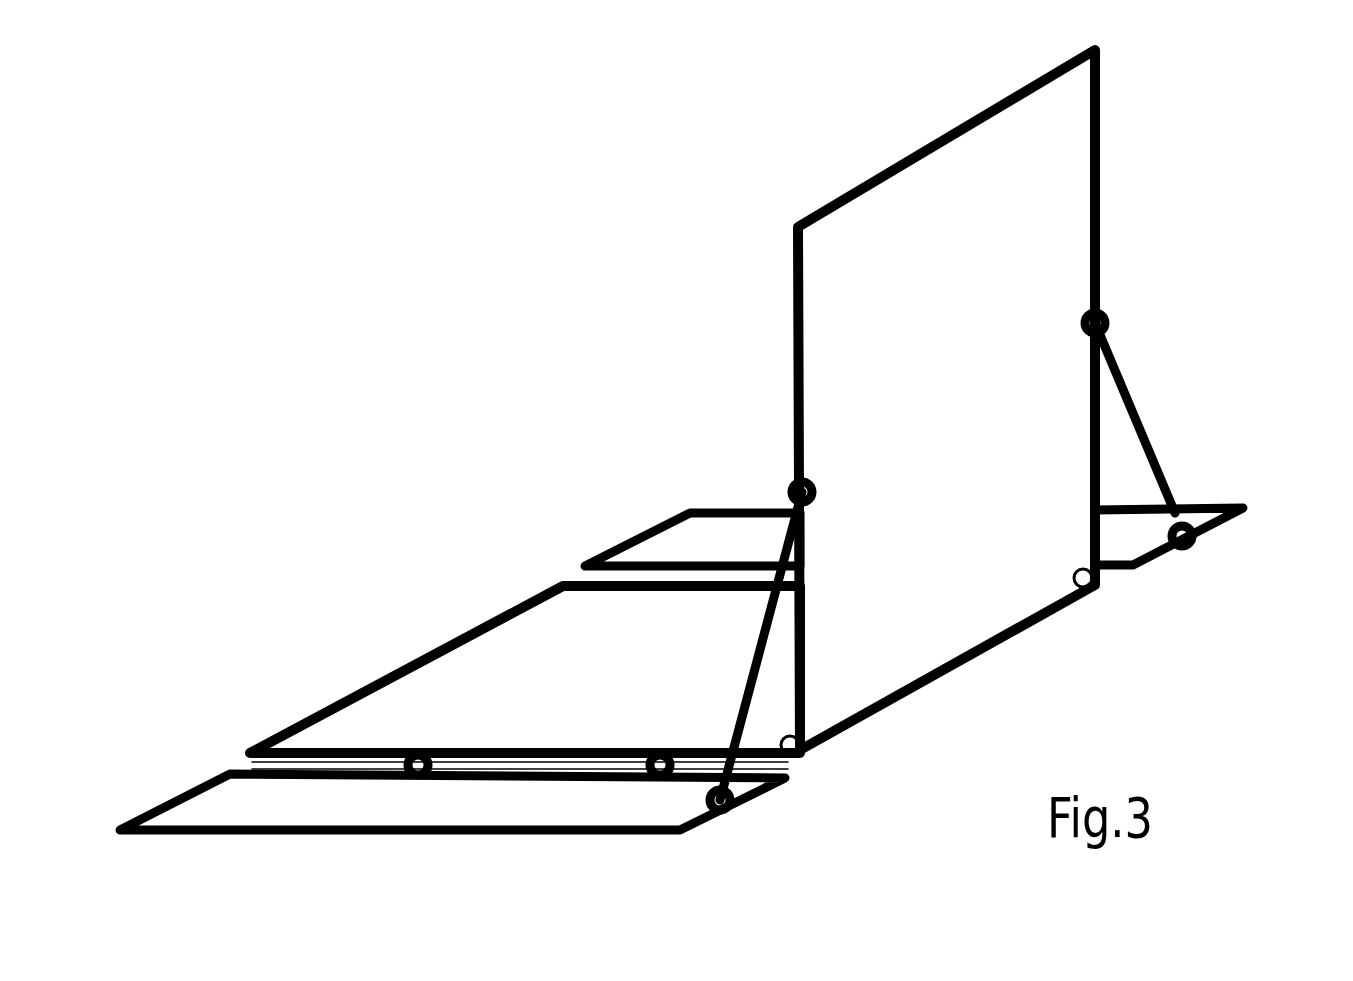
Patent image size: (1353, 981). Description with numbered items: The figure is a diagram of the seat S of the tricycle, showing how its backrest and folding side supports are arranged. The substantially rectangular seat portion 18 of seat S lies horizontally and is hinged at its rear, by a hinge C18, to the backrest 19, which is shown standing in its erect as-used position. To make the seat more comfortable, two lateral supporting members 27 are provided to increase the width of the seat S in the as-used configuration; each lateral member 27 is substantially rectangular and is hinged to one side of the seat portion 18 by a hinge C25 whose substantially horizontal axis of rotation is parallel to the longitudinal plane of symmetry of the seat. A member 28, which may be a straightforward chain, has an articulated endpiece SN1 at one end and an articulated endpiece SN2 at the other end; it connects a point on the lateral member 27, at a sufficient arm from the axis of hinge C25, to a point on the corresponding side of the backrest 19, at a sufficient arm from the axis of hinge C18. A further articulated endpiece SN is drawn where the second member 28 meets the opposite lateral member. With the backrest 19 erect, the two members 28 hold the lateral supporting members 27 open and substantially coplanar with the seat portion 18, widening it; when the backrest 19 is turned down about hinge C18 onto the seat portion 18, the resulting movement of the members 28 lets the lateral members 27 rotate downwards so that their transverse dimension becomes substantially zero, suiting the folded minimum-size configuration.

The seat S is at (1183, 173).
The seat portion 18 is at (500, 652).
The backrest 19 is at (973, 562).
The lateral supporting member 27 is at (694, 535).
The member 28 is at (1140, 417).
The sensor node SN is at (1192, 547).
The articulated endpiece SN1 is at (733, 806).
The articulated endpiece SN2 is at (1106, 318).
The hinge C18 is at (1098, 592).
The hinge C25 is at (630, 748).